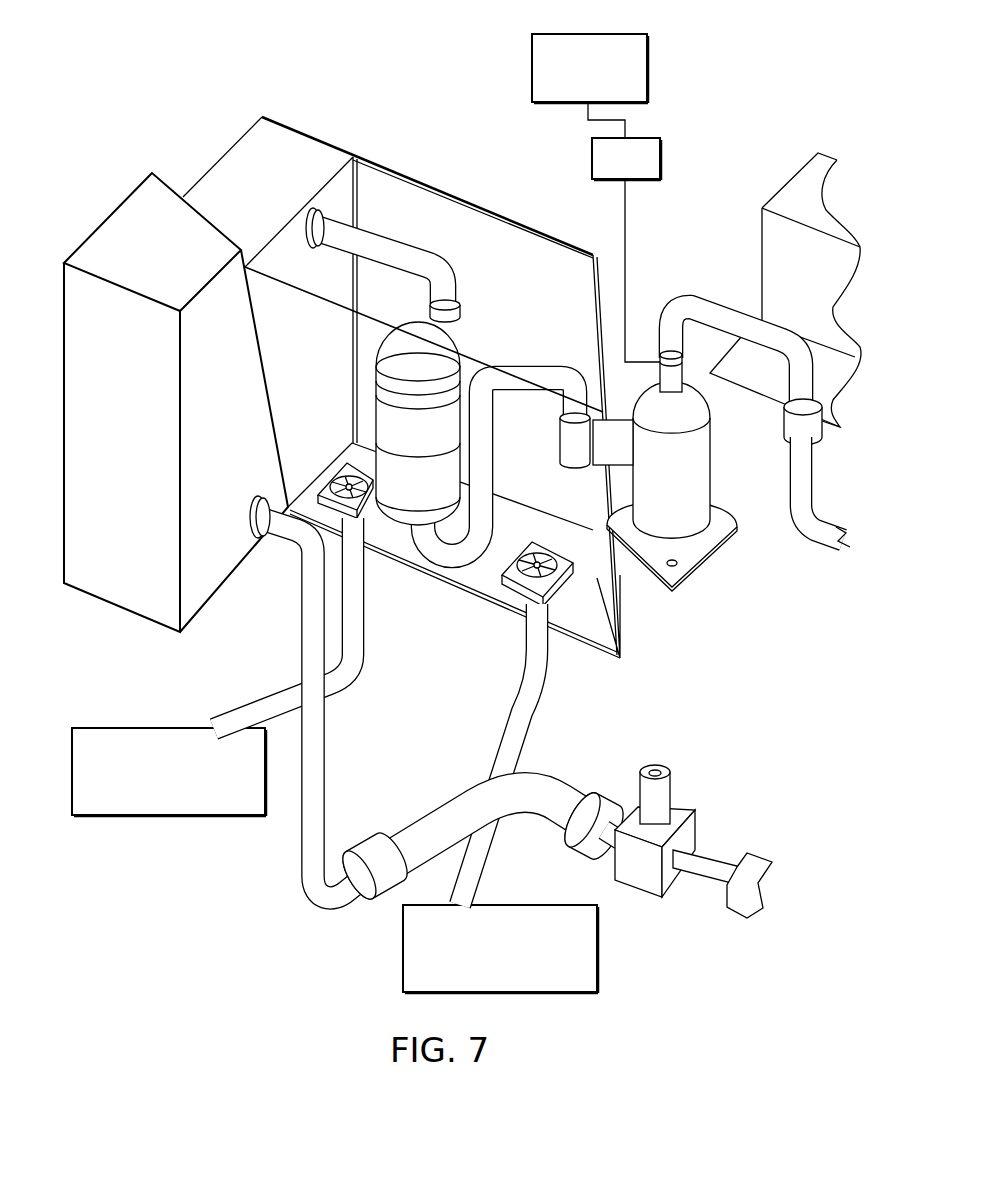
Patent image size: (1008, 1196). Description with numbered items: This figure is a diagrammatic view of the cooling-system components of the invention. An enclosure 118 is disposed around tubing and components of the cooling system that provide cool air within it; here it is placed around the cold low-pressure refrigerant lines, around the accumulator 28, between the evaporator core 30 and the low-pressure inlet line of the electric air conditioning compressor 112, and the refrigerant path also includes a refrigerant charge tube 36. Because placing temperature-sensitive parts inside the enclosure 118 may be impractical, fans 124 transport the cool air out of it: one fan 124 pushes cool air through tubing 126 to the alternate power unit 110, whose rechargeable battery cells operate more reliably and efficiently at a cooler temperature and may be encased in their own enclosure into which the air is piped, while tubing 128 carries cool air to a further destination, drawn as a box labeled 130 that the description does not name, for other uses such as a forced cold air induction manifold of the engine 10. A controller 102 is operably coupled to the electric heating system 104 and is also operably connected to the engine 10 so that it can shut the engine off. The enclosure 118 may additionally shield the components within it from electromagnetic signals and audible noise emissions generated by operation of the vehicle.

The engine 10 is at (790, 177).
The accumulator 28 is at (407, 327).
The evaporator 30 is at (224, 164).
The refrigerant charge tube 36 is at (637, 883).
The controller 102 is at (608, 170).
The electric heating system 104 is at (572, 79).
The alternate power unit 110 is at (152, 785).
The electric air conditioning compressor 112 is at (698, 458).
The enclosure 118 is at (473, 201).
The fans 124 is at (332, 479).
The tubing 126 is at (260, 698).
The tubing 128 is at (543, 705).
The reservoir 130 is at (484, 962).